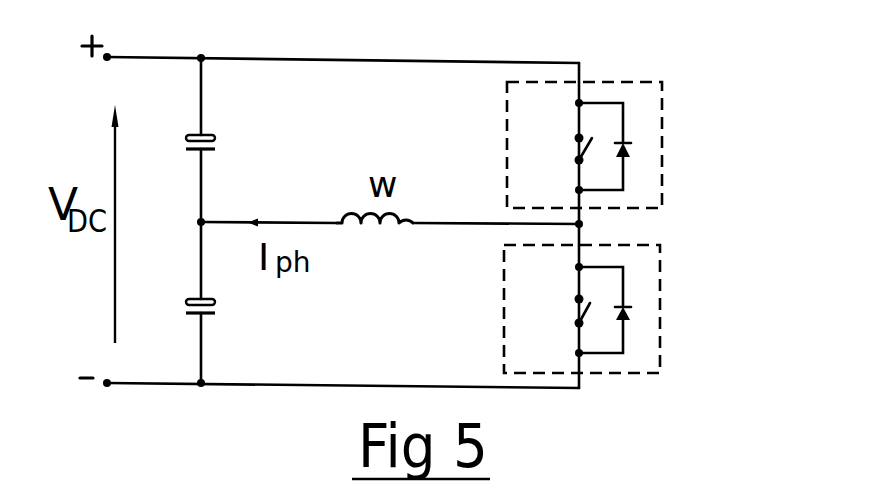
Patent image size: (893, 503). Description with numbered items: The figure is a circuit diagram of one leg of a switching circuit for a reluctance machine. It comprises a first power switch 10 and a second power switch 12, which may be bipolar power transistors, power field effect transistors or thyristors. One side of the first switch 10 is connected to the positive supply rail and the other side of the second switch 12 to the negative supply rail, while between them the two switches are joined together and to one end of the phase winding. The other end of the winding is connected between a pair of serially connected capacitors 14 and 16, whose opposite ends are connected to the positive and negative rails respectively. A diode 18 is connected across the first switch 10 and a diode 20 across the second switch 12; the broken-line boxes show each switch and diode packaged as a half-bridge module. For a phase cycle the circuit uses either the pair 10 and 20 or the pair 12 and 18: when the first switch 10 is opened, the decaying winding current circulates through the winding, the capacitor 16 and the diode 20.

The first power switch 10 is at (582, 147).
The second power switch 12 is at (573, 309).
The capacitor 14 is at (207, 134).
The capacitor 16 is at (215, 302).
The diode 18 is at (632, 150).
The diode 20 is at (628, 312).